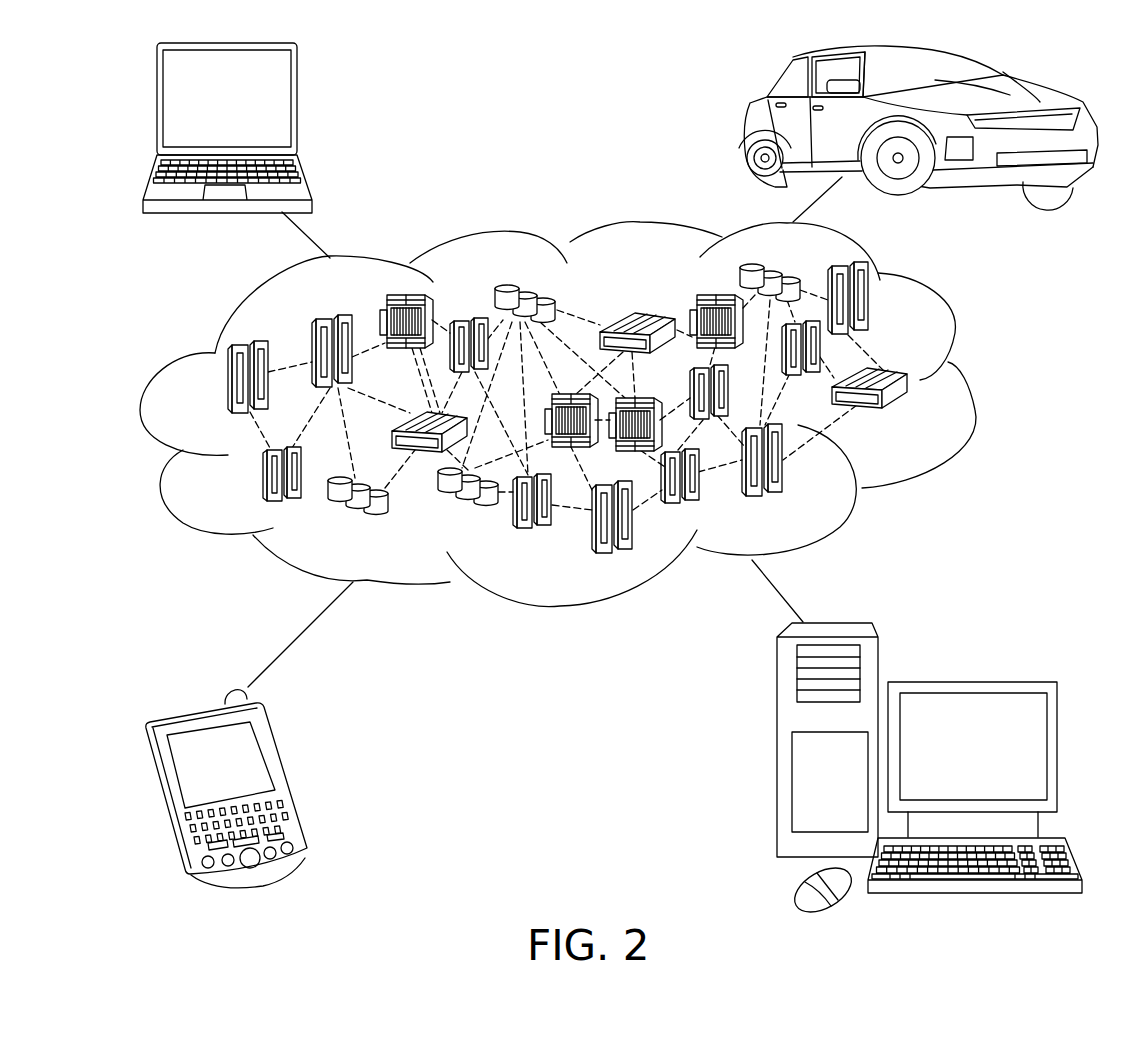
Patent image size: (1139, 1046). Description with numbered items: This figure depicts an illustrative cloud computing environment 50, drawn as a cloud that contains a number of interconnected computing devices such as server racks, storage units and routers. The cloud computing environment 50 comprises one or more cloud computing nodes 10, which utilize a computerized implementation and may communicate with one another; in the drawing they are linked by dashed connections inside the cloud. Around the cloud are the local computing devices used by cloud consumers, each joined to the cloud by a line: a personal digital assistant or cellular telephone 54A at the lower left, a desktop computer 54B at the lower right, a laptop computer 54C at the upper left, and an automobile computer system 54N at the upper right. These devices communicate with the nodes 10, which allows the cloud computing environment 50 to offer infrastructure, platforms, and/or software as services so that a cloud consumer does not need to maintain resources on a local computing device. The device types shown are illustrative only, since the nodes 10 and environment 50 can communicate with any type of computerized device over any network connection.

The cloud computing nodes 10 is at (912, 418).
The cloud computing environment 50 is at (972, 387).
The personal digital assistant or cellular telephone 54A is at (290, 778).
The desktop computer 54B is at (970, 682).
The laptop computer 54C is at (297, 108).
The automobile computer system 54N is at (743, 121).